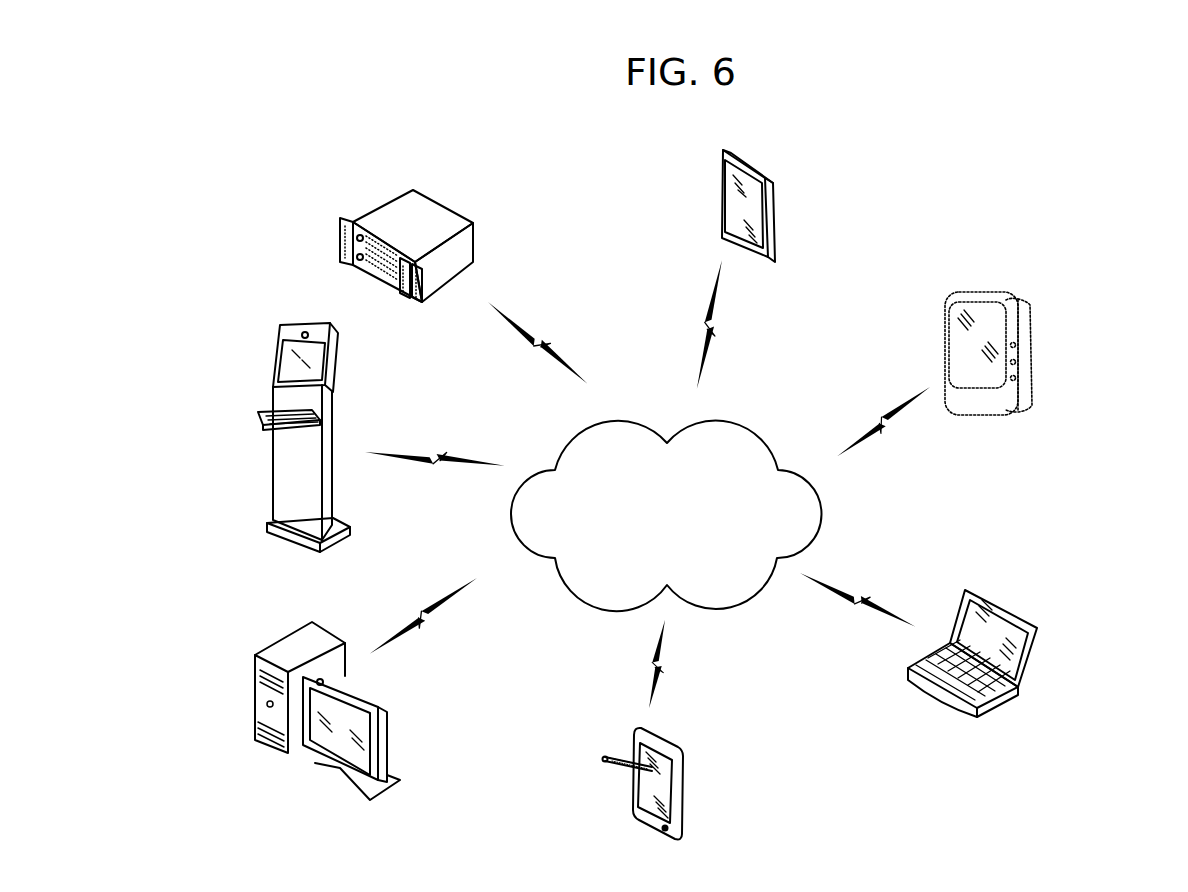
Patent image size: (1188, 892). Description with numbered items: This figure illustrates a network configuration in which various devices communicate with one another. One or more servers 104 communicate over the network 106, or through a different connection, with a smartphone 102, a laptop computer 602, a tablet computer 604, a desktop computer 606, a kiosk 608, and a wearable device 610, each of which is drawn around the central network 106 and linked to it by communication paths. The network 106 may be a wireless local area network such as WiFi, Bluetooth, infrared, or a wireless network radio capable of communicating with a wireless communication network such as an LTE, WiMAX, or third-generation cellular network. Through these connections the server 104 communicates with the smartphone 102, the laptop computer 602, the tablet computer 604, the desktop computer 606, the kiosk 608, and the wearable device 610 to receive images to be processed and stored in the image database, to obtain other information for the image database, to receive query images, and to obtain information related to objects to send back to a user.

The smartphone 102 is at (771, 173).
The server 104 is at (392, 214).
The network 106 is at (738, 432).
The laptop computer 602 is at (1038, 630).
The tablet computer 604 is at (678, 783).
The desktop computer 606 is at (253, 667).
The kiosk 608 is at (273, 400).
The wearable device 610 is at (1027, 323).